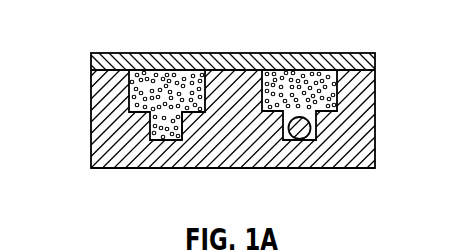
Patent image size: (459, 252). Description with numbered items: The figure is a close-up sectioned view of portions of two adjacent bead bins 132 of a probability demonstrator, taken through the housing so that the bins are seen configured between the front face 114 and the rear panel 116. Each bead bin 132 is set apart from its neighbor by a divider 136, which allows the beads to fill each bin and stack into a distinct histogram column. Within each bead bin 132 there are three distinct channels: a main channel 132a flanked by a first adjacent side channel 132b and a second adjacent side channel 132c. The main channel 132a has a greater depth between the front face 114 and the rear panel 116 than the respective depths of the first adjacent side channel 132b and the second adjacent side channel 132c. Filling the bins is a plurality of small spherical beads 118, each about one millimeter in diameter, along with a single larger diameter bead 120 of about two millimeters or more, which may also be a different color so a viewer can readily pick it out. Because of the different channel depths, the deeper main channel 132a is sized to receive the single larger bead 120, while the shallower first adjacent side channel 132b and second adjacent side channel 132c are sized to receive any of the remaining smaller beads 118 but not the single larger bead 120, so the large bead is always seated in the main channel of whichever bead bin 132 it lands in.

The front face 114 is at (293, 60).
The rear panel 116 is at (117, 168).
The spherical beads 118 is at (170, 73).
The single larger diameter bead 120 is at (311, 128).
The bead bin 132 is at (167, 149).
The main channel 132a is at (183, 122).
The first adjacent side channel 132b is at (141, 114).
The second adjacent side channel 132c is at (183, 113).
The divider 136 is at (248, 58).